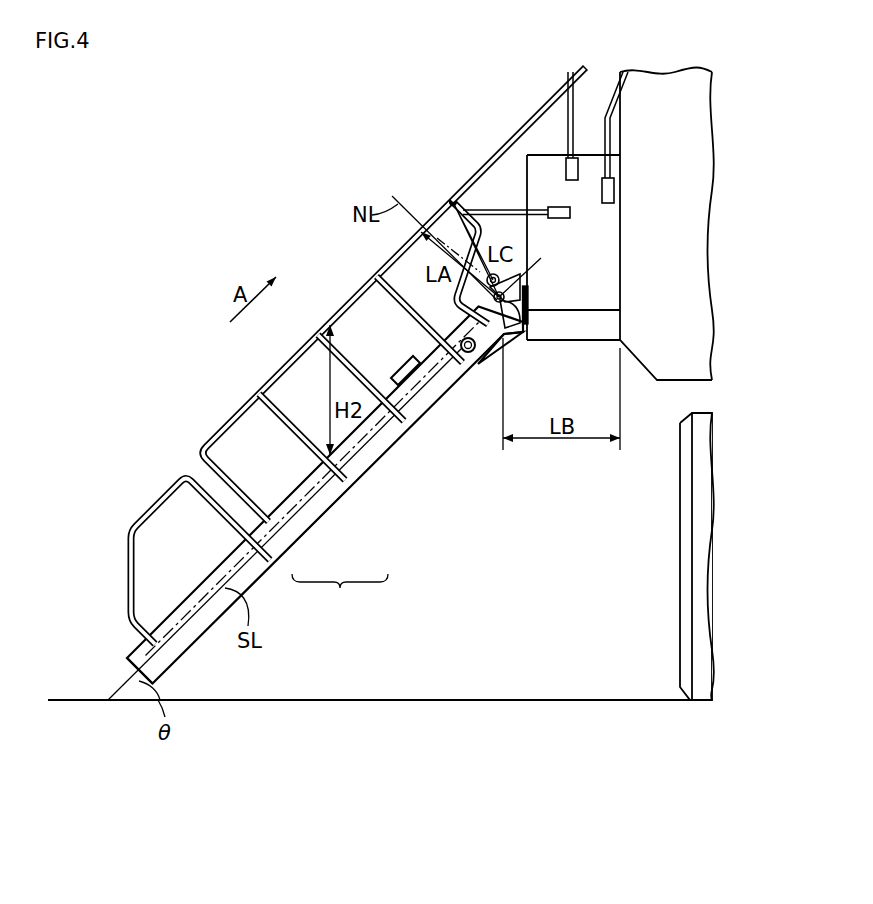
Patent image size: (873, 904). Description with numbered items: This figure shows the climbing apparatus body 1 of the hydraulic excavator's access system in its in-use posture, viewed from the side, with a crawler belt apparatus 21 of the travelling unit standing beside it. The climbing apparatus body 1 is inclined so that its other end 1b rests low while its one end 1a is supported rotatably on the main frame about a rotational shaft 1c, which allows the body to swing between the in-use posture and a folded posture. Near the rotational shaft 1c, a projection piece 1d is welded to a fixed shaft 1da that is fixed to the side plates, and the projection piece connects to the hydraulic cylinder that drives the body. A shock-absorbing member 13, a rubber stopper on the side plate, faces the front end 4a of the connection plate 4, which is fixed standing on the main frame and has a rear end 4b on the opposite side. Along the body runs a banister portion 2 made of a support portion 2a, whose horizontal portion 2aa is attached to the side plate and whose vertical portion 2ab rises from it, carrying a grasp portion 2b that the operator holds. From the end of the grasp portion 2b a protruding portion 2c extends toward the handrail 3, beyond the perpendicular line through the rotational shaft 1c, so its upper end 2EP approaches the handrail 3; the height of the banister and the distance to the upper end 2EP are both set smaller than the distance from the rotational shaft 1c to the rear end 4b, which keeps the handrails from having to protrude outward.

The climbing apparatus body 1 is at (368, 456).
The one end of climbing apparatus body 1a is at (518, 273).
The other end of climbing apparatus body 1b is at (126, 660).
The rotational shaft 1c is at (518, 290).
The projection piece 1d is at (490, 355).
The fixed shaft 1da is at (470, 362).
The banister portion 2 is at (330, 324).
The support portion 2a is at (340, 589).
The horizontal portion 2aa is at (347, 480).
The vertical portion 2ab is at (296, 447).
The grasp portion 2b is at (288, 365).
The protruding portion 2c is at (424, 222).
The upper end of protruding portion 2EP is at (451, 198).
The handrail 3 is at (558, 90).
The connection plate 4 is at (577, 290).
The front end of connection plate 4a is at (527, 170).
The rear end of connection plate 4b is at (623, 213).
The shock-absorbing member 13 is at (415, 380).
The crawler belt apparatus 21 is at (700, 553).